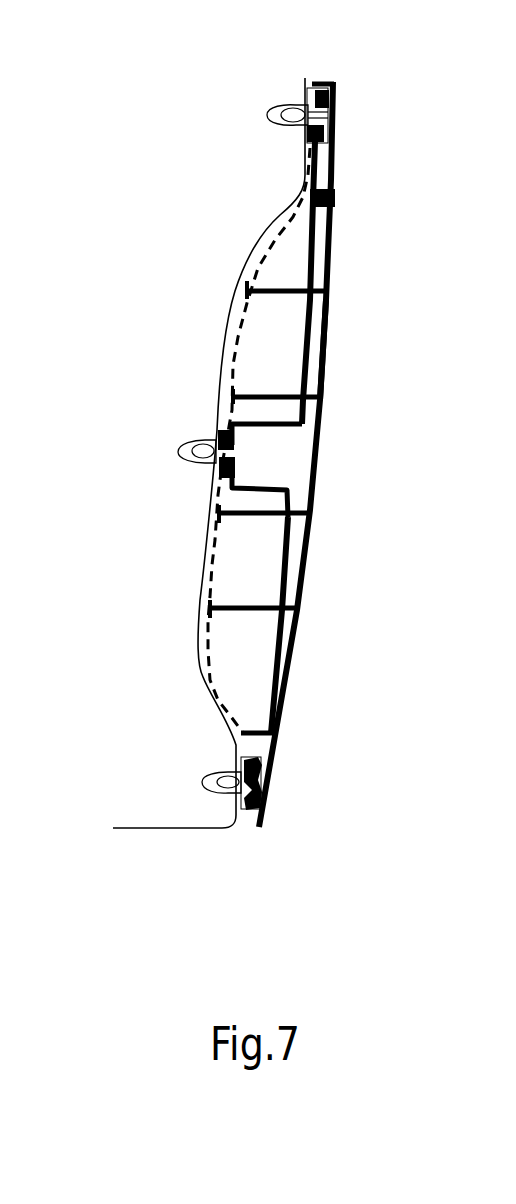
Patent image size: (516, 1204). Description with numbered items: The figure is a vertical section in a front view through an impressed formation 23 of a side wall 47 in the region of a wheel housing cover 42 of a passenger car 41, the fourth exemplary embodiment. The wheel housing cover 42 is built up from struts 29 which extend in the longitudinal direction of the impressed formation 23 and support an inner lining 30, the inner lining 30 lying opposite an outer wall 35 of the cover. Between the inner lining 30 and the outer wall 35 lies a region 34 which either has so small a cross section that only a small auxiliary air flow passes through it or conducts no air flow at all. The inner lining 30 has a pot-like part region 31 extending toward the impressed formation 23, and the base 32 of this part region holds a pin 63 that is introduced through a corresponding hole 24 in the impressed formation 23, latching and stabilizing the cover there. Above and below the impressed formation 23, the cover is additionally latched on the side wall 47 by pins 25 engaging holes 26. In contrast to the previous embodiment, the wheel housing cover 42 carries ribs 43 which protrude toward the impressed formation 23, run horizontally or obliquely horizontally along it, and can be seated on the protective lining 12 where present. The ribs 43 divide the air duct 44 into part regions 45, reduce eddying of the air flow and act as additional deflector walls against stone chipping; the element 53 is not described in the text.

The passenger car 41 is at (135, 138).
The side wall 47 is at (206, 419).
The impressed formation 23 is at (234, 293).
The protective lining 12 is at (204, 640).
The wheel housing cover 42 is at (285, 454).
The struts 29 is at (283, 608).
The inner lining 30 is at (297, 372).
The region between inner lining and outer wall 34 is at (323, 340).
The pot-like part region 31 is at (253, 483).
The base 32 is at (232, 438).
The air duct 44 is at (304, 434).
The part regions 45 is at (270, 240).
The ribs 43 is at (277, 297).
The outer wall 35 is at (283, 703).
The pins 25 is at (281, 108).
The holes 26 is at (297, 130).
The hole 24 is at (197, 472).
The pin 63 is at (195, 440).
The element 53 is at (508, 660).